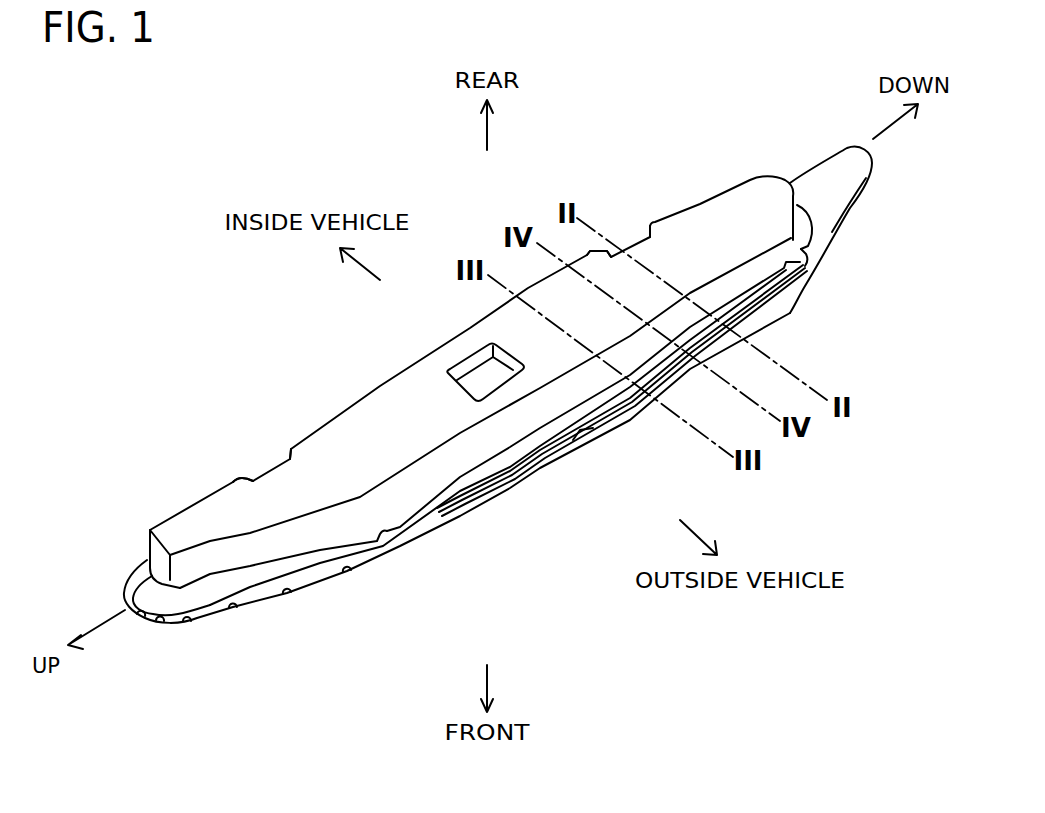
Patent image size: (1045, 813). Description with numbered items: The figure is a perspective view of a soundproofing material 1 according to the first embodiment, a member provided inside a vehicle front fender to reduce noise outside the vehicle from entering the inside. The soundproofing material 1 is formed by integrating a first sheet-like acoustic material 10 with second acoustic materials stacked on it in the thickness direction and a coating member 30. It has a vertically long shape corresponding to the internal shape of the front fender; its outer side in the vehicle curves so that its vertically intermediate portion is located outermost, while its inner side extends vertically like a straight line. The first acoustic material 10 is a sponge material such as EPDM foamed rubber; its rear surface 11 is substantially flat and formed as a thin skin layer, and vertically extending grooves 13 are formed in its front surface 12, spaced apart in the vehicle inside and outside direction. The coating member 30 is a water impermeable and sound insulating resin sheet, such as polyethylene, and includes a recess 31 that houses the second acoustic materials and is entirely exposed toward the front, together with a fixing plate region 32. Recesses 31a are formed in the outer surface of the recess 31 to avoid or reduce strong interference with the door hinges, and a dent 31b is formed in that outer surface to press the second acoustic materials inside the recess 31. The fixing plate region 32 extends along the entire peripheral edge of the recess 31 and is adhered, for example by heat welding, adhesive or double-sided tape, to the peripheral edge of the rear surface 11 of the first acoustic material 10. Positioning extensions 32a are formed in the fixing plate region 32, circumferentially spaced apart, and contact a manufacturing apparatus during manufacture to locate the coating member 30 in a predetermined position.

The soundproofing material 1 is at (677, 131).
The first sheet-like acoustic material 10 is at (846, 145).
The rear surface 11 is at (847, 176).
The front surface 12 is at (825, 253).
The grooves 13 is at (347, 573).
The coating member 30 is at (744, 170).
The recess 31 is at (560, 300).
The recesses 31a is at (264, 478).
The dent 31b is at (478, 382).
The fixing plate region 32 is at (465, 482).
The positioning extensions 32a is at (787, 293).